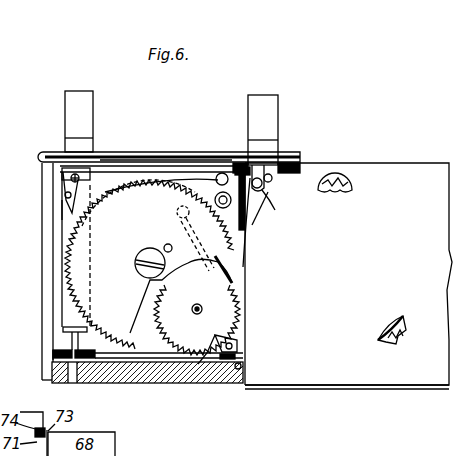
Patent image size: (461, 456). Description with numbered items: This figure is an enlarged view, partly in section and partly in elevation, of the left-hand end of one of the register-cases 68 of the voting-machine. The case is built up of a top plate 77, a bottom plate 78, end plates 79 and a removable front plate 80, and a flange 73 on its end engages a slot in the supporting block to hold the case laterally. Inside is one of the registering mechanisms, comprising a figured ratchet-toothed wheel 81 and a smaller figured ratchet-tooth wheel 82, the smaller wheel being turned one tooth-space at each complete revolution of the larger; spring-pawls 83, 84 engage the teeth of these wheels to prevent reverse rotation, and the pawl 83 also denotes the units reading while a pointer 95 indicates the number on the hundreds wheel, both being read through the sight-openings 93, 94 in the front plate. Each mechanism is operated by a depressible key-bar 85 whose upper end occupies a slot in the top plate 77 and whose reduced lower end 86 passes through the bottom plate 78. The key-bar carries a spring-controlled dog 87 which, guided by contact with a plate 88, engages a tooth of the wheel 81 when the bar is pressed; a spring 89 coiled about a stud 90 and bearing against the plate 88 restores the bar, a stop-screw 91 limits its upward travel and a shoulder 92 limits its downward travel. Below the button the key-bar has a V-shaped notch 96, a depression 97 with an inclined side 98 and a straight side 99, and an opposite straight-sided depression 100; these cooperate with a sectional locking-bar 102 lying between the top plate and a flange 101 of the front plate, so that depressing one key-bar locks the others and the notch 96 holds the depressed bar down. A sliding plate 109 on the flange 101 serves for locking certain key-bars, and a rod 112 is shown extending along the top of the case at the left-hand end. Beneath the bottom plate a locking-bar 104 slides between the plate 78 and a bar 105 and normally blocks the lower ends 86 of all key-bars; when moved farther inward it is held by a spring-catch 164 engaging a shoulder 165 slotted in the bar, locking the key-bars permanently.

The register-case 68 is at (347, 397).
The flange 73 is at (38, 271).
The top plate 77 is at (128, 168).
The bottom plate 78 is at (150, 358).
The end plate 79 is at (62, 245).
The front plate 80 is at (348, 276).
The figured ratchet-toothed wheel 81 is at (149, 264).
The smaller figured ratchet-tooth wheel 82 is at (197, 320).
The spring-pawl 83 is at (183, 175).
The spring-pawl 84 is at (233, 264).
The key-bar 85 is at (72, 218).
The lower end of key-bar 86 is at (58, 348).
The spring-controlled dog 87 is at (65, 190).
The plate 88 is at (229, 167).
The spring 89 is at (103, 180).
The stud 90 is at (219, 206).
The stop-screw 91 is at (81, 192).
The shoulder 92 is at (62, 336).
The sight-opening 93 is at (348, 186).
The sight-opening 94 is at (398, 344).
The pointer 95 is at (244, 340).
The notch 96 is at (268, 172).
The depression 97 is at (274, 174).
The inclined side 98 is at (262, 166).
The straight side 99 is at (300, 142).
The straight-sided depression 100 is at (247, 163).
The flange 101 is at (294, 168).
The locking-bar 102 is at (304, 163).
The locking-bar 104 is at (186, 362).
The bar 105 is at (230, 372).
The plate 109 is at (158, 160).
The rod 112 is at (41, 157).
The spring-catch 164 is at (243, 368).
The shoulder 165 is at (201, 342).